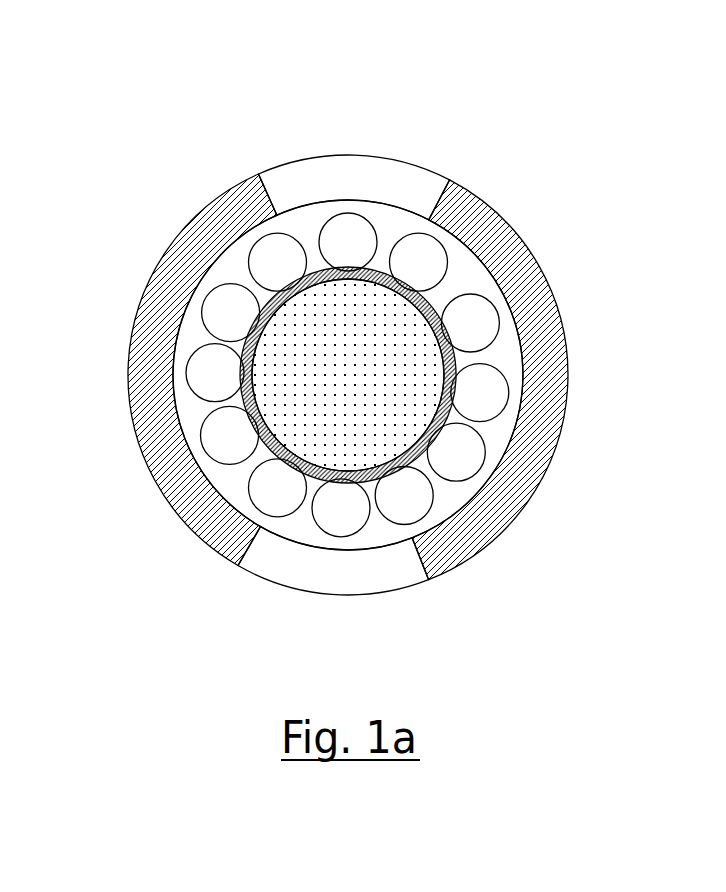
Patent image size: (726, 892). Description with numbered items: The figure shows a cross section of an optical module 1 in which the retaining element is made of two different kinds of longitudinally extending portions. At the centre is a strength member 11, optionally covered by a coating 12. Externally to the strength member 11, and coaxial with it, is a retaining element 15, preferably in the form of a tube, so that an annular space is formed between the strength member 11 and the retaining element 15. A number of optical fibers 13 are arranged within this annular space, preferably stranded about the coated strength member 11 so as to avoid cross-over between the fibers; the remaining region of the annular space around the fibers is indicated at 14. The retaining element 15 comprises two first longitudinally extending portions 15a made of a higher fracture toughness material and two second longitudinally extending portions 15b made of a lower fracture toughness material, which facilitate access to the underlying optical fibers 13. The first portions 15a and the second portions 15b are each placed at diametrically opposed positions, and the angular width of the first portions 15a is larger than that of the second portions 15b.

The optical module 1 is at (354, 375).
The strength member 11 is at (376, 278).
The coating 12 is at (265, 452).
The optical fibers 13 is at (438, 240).
The filler 14 is at (446, 497).
The retaining element 15 is at (354, 375).
The first longitudinally extending portions 15a is at (130, 333).
The second longitudinally extending portions 15b is at (308, 157).